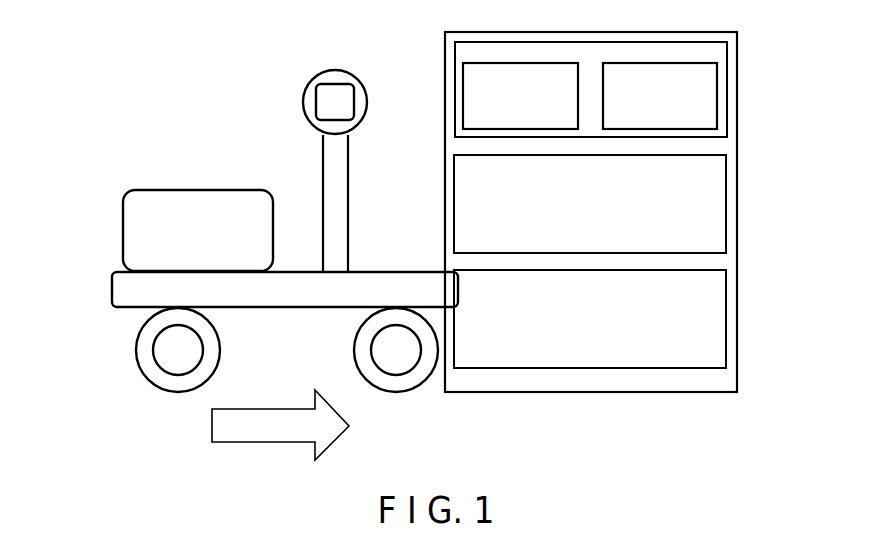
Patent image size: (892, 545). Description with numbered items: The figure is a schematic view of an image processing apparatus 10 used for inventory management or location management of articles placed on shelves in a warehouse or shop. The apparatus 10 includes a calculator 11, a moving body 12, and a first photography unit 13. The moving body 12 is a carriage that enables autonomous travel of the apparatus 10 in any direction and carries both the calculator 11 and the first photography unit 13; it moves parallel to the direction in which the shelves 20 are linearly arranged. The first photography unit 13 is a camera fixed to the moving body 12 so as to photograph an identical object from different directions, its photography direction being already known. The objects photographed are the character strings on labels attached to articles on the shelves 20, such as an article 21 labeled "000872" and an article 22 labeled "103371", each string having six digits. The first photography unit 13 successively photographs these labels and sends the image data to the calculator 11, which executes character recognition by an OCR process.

The image processing apparatus 10 is at (153, 88).
The calculator 11 is at (198, 190).
The moving body 12 is at (112, 292).
The first photography unit 13 is at (334, 70).
The shelves 20 is at (737, 70).
The article 21 is at (518, 63).
The article 22 is at (660, 63).